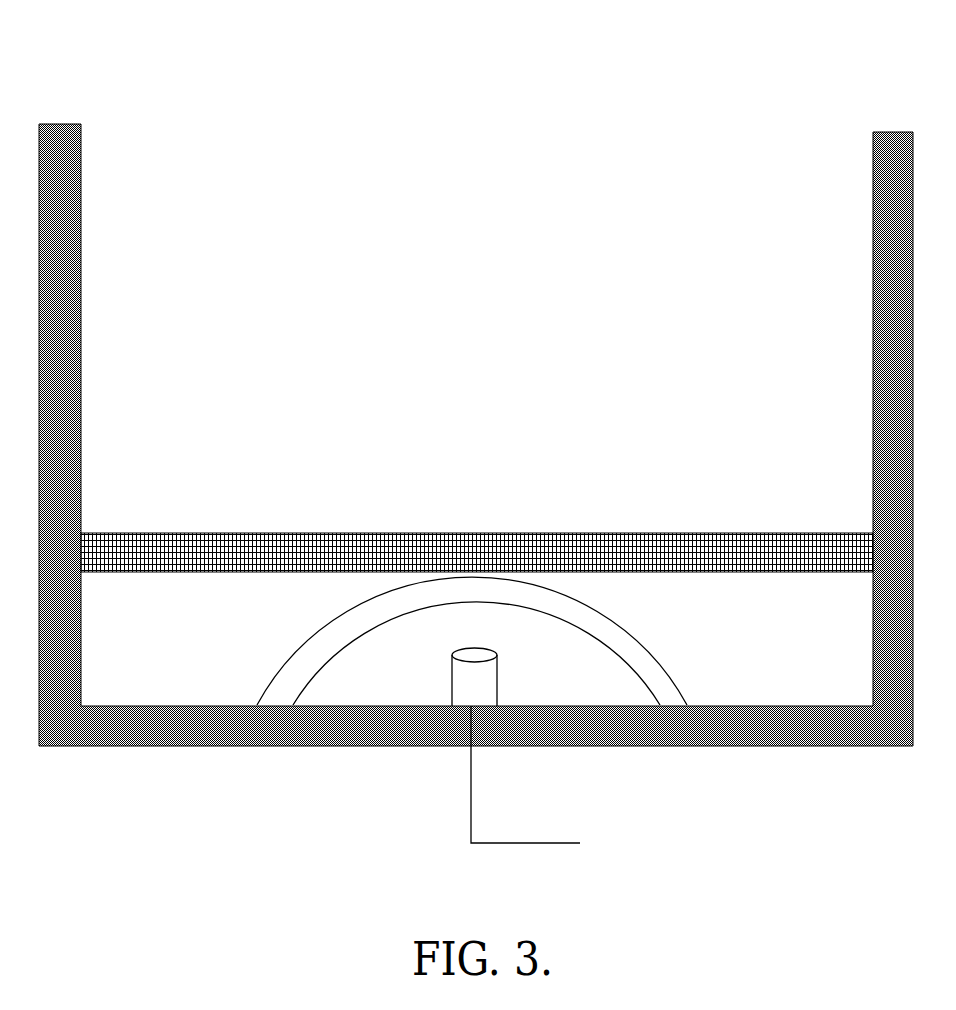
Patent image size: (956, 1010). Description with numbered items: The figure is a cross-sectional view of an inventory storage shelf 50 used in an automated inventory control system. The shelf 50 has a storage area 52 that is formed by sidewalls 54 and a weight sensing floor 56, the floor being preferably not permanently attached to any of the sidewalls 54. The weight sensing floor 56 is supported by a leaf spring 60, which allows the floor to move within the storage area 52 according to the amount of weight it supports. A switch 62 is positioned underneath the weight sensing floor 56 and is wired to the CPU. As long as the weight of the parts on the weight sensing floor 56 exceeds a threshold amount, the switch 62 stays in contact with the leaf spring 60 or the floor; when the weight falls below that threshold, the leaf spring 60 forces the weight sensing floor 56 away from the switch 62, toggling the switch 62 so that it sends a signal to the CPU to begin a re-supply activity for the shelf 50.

The inventory storage shelf 50 is at (714, 93).
The storage area 52 is at (491, 311).
The sidewalls 54 is at (63, 267).
The weight sensing floor 56 is at (228, 560).
The leaf spring 60 is at (565, 613).
The switch 62 is at (472, 678).